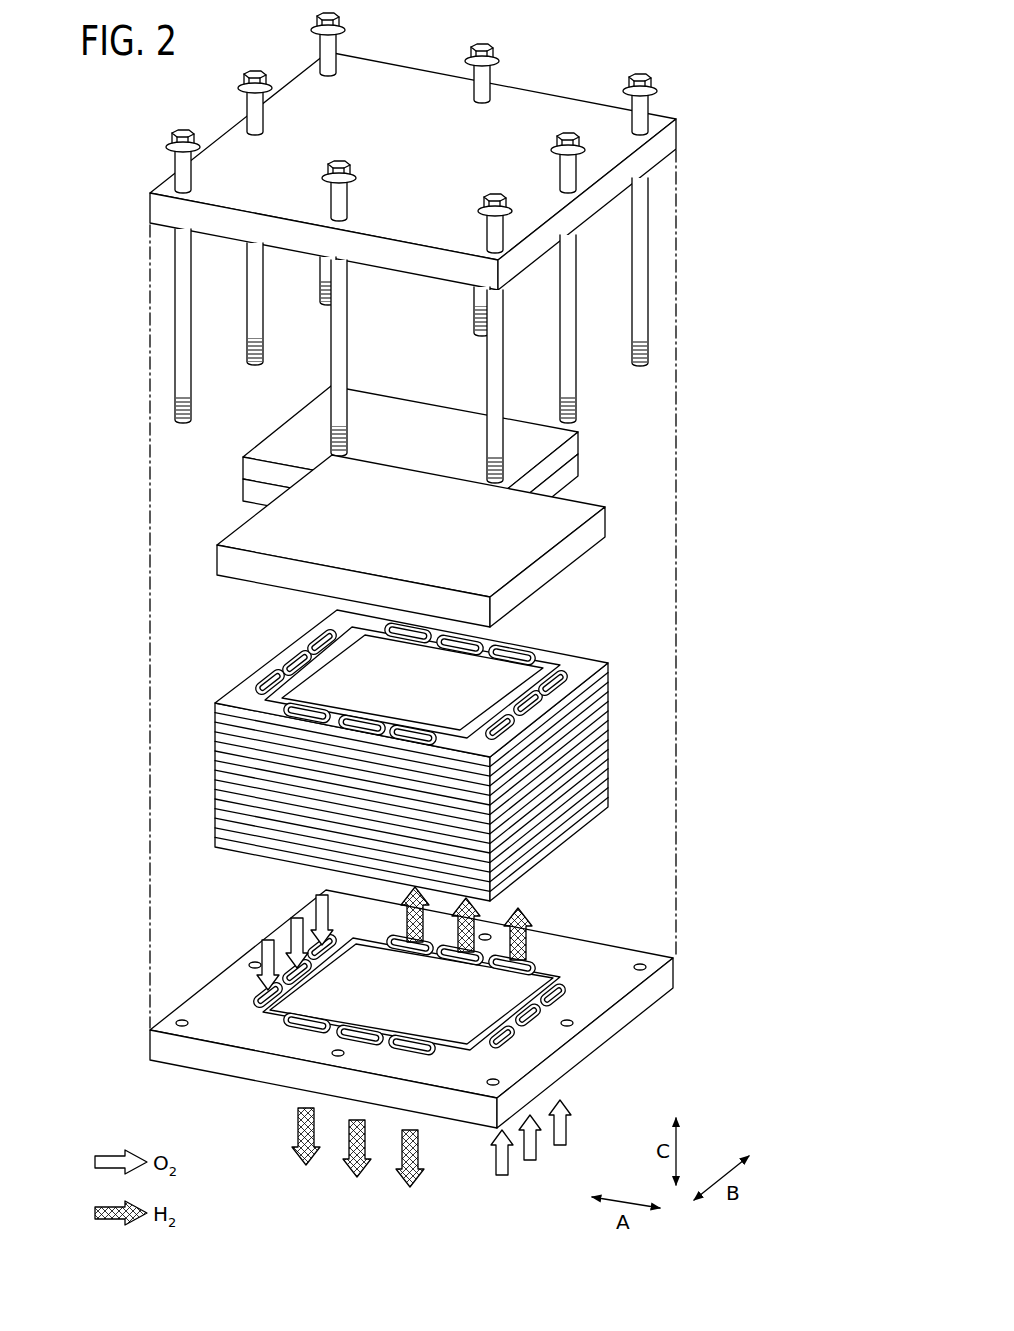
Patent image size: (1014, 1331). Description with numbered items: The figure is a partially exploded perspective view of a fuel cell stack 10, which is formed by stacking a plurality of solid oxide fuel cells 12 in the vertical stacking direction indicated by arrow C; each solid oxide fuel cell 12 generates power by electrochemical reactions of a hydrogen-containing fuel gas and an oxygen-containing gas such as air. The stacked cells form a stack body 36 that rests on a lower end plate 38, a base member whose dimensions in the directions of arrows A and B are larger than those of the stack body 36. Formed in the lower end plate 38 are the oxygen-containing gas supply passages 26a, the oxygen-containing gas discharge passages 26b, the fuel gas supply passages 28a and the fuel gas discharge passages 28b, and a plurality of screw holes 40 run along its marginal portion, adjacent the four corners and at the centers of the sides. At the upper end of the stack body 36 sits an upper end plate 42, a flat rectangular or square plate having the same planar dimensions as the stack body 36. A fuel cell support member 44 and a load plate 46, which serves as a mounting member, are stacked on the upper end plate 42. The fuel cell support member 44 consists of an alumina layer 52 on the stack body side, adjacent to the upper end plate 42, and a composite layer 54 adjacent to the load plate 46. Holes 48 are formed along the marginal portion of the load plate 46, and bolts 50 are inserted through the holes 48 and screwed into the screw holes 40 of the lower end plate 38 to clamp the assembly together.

The fuel cell stack 10 is at (709, 55).
The solid oxide fuel cell 12 is at (213, 760).
The oxygen-containing gas supply passages 26a is at (530, 1015).
The oxygen-containing gas discharge passages 26b is at (257, 993).
The fuel gas supply passages 28a is at (533, 968).
The fuel gas discharge passages 28b is at (373, 1027).
The stack body 36 is at (604, 657).
The lower end plate 38 is at (680, 960).
The screw holes 40 is at (182, 1030).
The upper end plate 42 is at (588, 504).
The fuel cell support member 44 is at (586, 446).
The load plate 46 is at (680, 121).
The holes 48 is at (475, 88).
The bolts 50 is at (497, 44).
The alumina layer 52 is at (250, 490).
The composite layer 54 is at (252, 470).